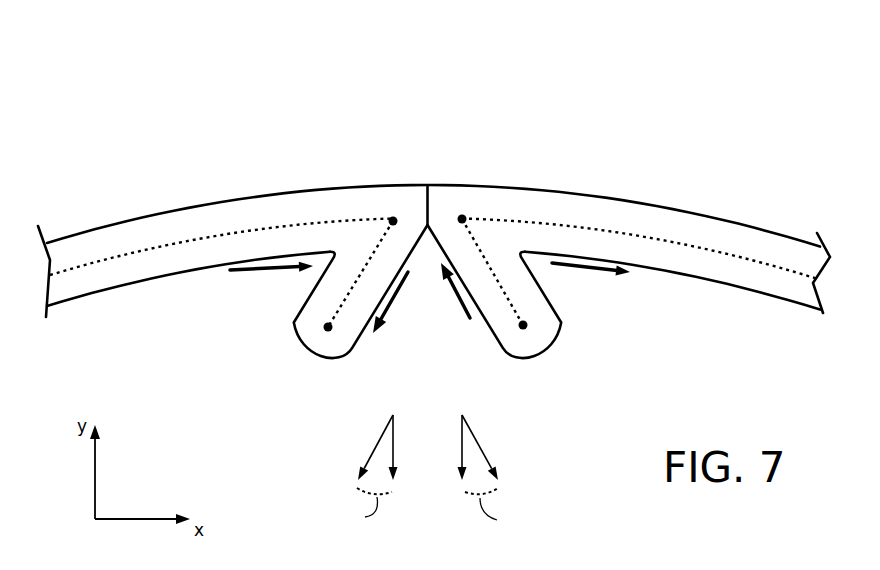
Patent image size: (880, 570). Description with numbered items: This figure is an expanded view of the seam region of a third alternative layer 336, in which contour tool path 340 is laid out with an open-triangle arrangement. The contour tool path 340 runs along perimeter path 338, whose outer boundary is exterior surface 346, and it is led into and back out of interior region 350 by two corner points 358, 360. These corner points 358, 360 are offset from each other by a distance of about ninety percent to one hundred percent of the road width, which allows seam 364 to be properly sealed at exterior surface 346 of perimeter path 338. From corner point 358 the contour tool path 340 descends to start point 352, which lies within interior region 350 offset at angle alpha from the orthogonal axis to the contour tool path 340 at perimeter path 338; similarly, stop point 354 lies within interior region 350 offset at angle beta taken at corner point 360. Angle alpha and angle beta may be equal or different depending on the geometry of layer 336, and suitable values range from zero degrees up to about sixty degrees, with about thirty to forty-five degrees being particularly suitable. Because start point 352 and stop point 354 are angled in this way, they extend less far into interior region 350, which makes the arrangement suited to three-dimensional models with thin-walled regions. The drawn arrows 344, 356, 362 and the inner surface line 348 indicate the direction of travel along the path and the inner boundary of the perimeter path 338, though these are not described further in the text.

The layer 336 is at (670, 53).
The perimeter path 338 is at (597, 176).
The contour tool path 340 is at (124, 252).
The direction of force along member 344 is at (278, 273).
The exterior surface 346 is at (715, 217).
The inner surface of arcuate member 348 is at (780, 296).
The interior region 350 is at (322, 478).
The start point 352 is at (527, 327).
The stop point 354 is at (324, 328).
The force direction along right leg 356 is at (471, 321).
The corner point 358 is at (462, 215).
The corner point 360 is at (393, 217).
The force direction along left leg 362 is at (395, 312).
The seam 364 is at (423, 170).